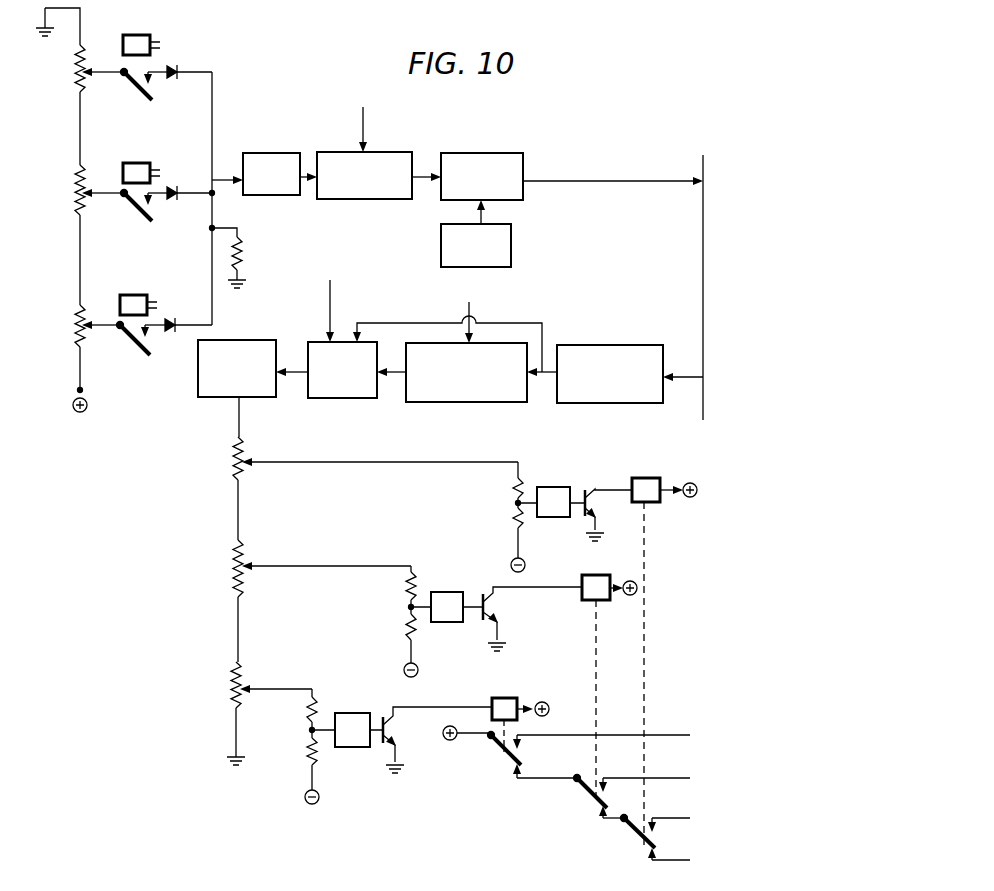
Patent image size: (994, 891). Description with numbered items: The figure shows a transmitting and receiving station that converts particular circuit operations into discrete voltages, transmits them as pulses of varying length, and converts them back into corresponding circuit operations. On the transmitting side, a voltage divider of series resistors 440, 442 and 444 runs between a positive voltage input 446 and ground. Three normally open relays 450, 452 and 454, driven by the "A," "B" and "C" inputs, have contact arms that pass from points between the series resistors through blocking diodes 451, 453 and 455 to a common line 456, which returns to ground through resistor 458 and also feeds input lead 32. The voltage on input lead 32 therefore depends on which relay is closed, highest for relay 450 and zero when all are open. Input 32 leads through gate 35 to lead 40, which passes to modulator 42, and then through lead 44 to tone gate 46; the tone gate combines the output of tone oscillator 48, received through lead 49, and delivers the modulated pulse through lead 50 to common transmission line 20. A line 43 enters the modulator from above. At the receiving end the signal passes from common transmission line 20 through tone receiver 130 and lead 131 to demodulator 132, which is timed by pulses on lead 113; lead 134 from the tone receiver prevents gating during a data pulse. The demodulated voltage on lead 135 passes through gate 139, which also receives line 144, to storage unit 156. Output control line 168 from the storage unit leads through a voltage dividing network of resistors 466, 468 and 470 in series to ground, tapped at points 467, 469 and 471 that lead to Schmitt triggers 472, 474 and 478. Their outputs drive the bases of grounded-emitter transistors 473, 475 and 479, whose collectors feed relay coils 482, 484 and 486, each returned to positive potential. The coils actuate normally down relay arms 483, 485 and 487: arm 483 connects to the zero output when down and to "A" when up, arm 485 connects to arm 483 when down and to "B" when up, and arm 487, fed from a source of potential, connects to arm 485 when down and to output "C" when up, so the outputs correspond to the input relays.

The common transmission line 20 is at (704, 281).
The input lead 32 is at (222, 176).
The gate 35 is at (292, 142).
The lead 40 is at (306, 197).
The modulator 42 is at (370, 200).
The modulator input line 43 is at (368, 127).
The lead 44 is at (424, 168).
The tone gate 46 is at (512, 153).
The tone oscillator 48 is at (512, 255).
The lead 49 is at (486, 215).
The lead 50 is at (652, 170).
The lead 113 is at (472, 316).
The tone receiver 130 is at (650, 330).
The lead 131 is at (548, 378).
The demodulator 132 is at (480, 402).
The lead 134 is at (540, 323).
The lead 135 is at (398, 374).
The gate 139 is at (334, 398).
The line 144 is at (332, 302).
The storage unit 156 is at (262, 397).
The output control line 168 is at (238, 425).
The series resistor 440 is at (70, 322).
The series resistor 442 is at (70, 190).
The series resistor 444 is at (70, 72).
The positive voltage input 446 is at (82, 372).
The relay 450 is at (132, 295).
The blocking diode 451 is at (172, 335).
The relay 452 is at (135, 163).
The blocking diode 453 is at (176, 201).
The relay 454 is at (135, 36).
The blocking diode 455 is at (176, 80).
The common line 456 is at (212, 105).
The resistor 458 is at (244, 255).
The resistor 466 is at (232, 458).
The tap point 467 is at (330, 455).
The resistor 468 is at (232, 556).
The tap point 469 is at (332, 552).
The resistor 470 is at (230, 672).
The tap point 471 is at (306, 678).
The Schmitt trigger 472 is at (548, 487).
The transistor 473 is at (600, 510).
The Schmitt trigger 474 is at (450, 582).
The transistor 475 is at (496, 606).
The Schmitt trigger 478 is at (355, 713).
The transistor 479 is at (398, 728).
The relay coil 482 is at (652, 470).
The relay arm 483 is at (636, 838).
The relay coil 484 is at (604, 600).
The relay arm 485 is at (592, 796).
The relay coil 486 is at (502, 698).
The relay arm 487 is at (505, 753).